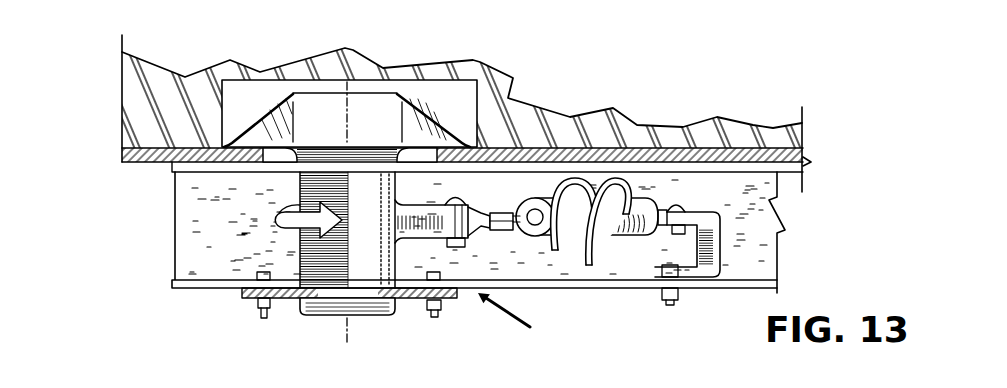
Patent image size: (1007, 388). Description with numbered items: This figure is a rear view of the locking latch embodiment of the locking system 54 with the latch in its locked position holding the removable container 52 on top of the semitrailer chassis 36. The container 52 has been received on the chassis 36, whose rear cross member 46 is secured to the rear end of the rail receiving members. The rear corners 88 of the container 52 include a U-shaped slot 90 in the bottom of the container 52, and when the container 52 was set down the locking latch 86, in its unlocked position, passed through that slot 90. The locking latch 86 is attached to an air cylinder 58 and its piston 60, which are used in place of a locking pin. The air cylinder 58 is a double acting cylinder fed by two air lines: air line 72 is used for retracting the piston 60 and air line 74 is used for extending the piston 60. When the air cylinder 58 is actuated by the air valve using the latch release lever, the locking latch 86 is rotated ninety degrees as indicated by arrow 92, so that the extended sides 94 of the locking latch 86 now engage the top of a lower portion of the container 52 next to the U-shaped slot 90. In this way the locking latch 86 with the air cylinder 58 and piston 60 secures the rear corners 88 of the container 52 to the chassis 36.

The removable container 52 is at (128, 80).
The rear corners 88 is at (128, 127).
The U-shaped slot 90 is at (285, 155).
The extended sides 94 is at (270, 112).
The locking latch 86 is at (372, 110).
The semitrailer chassis 36 is at (152, 231).
The rear cross member 46 is at (745, 227).
The arrow 92 is at (277, 210).
The locking system 54 is at (406, 320).
The air cylinder 58 is at (640, 208).
The piston 60 is at (527, 232).
The air line 72 is at (568, 243).
The air line 74 is at (607, 246).